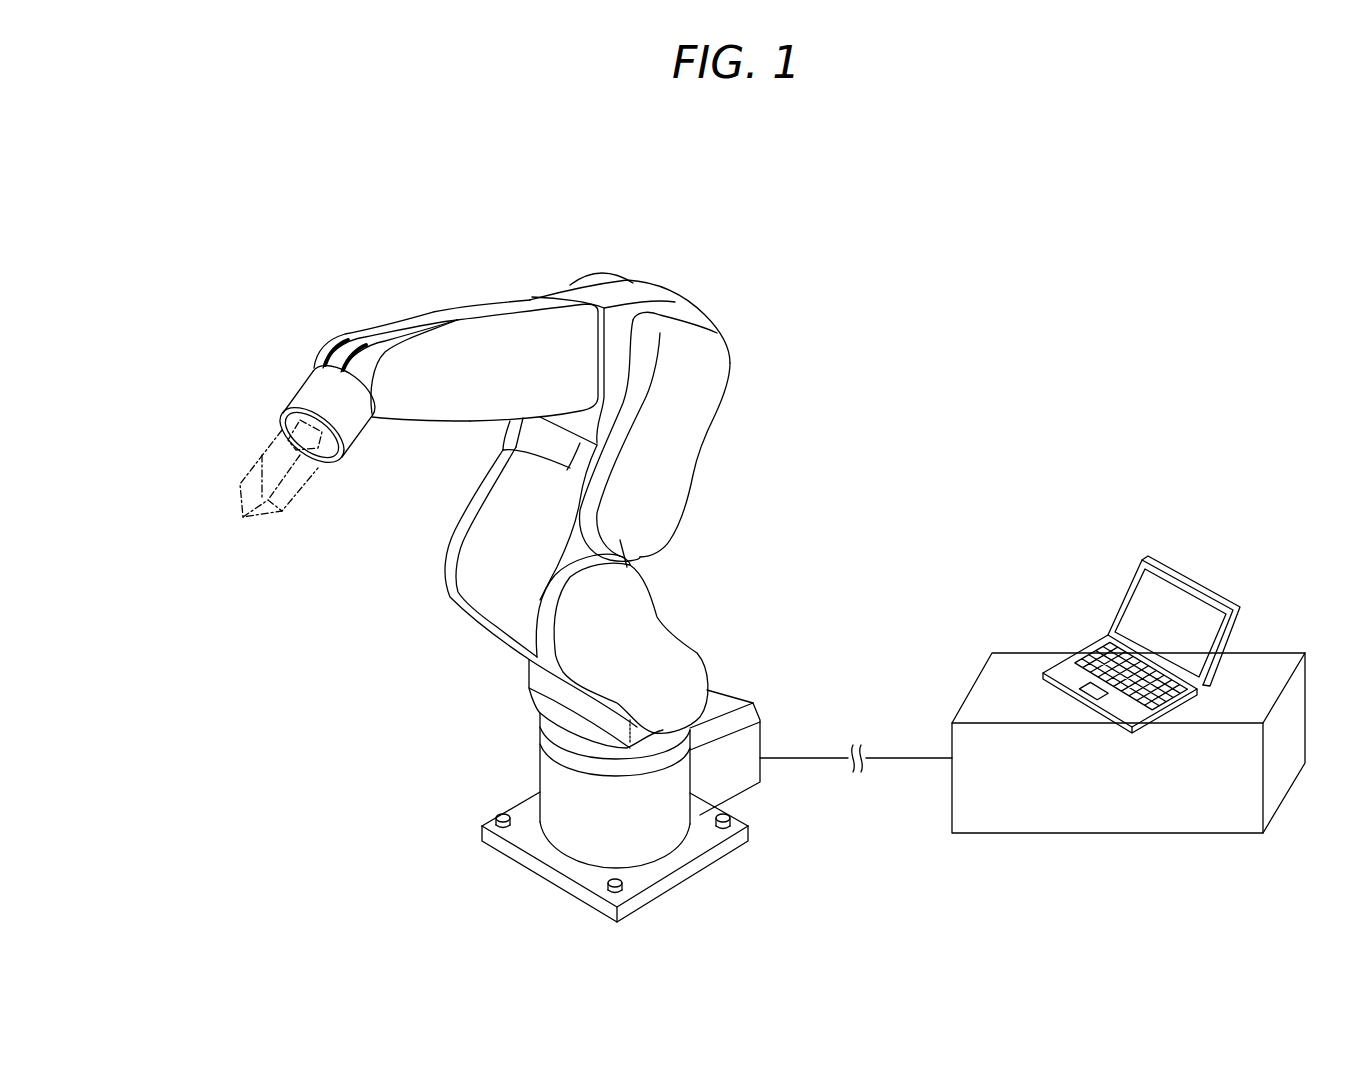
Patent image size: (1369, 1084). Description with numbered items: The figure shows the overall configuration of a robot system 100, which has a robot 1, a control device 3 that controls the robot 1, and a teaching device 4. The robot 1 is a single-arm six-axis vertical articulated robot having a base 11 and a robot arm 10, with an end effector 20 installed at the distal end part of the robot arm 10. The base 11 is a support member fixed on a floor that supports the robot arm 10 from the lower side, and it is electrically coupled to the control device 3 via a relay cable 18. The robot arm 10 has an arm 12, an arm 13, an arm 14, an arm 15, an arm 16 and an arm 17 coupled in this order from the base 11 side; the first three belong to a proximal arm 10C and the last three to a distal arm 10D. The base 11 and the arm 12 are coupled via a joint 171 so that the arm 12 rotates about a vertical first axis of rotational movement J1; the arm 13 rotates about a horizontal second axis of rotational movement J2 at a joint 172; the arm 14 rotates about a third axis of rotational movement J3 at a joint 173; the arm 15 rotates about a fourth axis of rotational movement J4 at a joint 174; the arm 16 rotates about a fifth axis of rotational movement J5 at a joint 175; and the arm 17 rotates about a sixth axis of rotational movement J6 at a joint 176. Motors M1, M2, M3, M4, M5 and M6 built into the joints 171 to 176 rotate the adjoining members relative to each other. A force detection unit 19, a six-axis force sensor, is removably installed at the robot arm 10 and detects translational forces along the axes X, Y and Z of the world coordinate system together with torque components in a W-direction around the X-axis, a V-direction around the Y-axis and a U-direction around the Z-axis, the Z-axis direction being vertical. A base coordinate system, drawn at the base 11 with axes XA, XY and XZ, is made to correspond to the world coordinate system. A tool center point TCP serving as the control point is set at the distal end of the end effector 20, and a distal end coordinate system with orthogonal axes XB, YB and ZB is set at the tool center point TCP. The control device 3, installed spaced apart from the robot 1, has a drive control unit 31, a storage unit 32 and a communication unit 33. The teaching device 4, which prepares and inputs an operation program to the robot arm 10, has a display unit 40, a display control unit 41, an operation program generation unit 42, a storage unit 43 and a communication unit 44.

The robot 1 is at (812, 262).
The control device 3 is at (1290, 644).
The teaching device 4 is at (1141, 618).
The robot arm 10 is at (739, 333).
The proximal arm 10C is at (836, 563).
The distal arm 10D is at (562, 178).
The base 11 is at (622, 850).
The arm (first arm) 12 is at (697, 672).
The arm (second arm) 13 is at (670, 497).
The arm (third arm) 14 is at (647, 288).
The arm (fourth arm) 15 is at (512, 330).
The arm (fifth arm) 16 is at (316, 340).
The arm (sixth arm) 17 is at (312, 392).
The relay cable 18 is at (913, 762).
The force detection unit 19 is at (332, 452).
The end effector 20 is at (295, 500).
The drive control unit 31 is at (1015, 797).
The storage unit 32 is at (1083, 797).
The communication unit 33 is at (1152, 797).
The display unit 40 is at (1150, 613).
The display control unit 41 is at (1130, 710).
The operation program generation unit 42 is at (1157, 715).
The storage unit 43 is at (1175, 700).
The communication unit 44 is at (1200, 692).
The robot system 100 is at (1224, 274).
The joint 171 is at (565, 718).
The joint 172 is at (447, 573).
The joint 173 is at (688, 296).
The joint 174 is at (568, 285).
The joint 175 is at (355, 325).
The joint 176 is at (397, 418).
The first axis of rotational movement J1 is at (628, 768).
The second axis of rotational movement J2 is at (667, 687).
The third axis of rotational movement J3 is at (597, 626).
The fourth axis of rotational movement J4 is at (697, 360).
The fifth axis of rotational movement J5 is at (453, 380).
The sixth axis of rotational movement J6 is at (270, 430).
The motor M1 is at (672, 818).
The motor M2 is at (643, 650).
The motor M3 is at (637, 527).
The motor M4 is at (620, 340).
The motor M5 is at (490, 378).
The motor M6 is at (318, 362).
The tool center point TCP is at (241, 515).
The X-axis X is at (523, 782).
The Y-axis Y is at (523, 880).
The Z-axis Z is at (638, 270).
The U-direction U is at (629, 221).
The V-direction V is at (476, 887).
The W-direction W is at (500, 748).
The XA-axis XA is at (622, 823).
The XY axis XY is at (622, 823).
The XZ axis XZ is at (622, 823).
The XB-axis XB is at (242, 517).
The YB-axis YB is at (242, 517).
The ZB-axis ZB is at (242, 517).